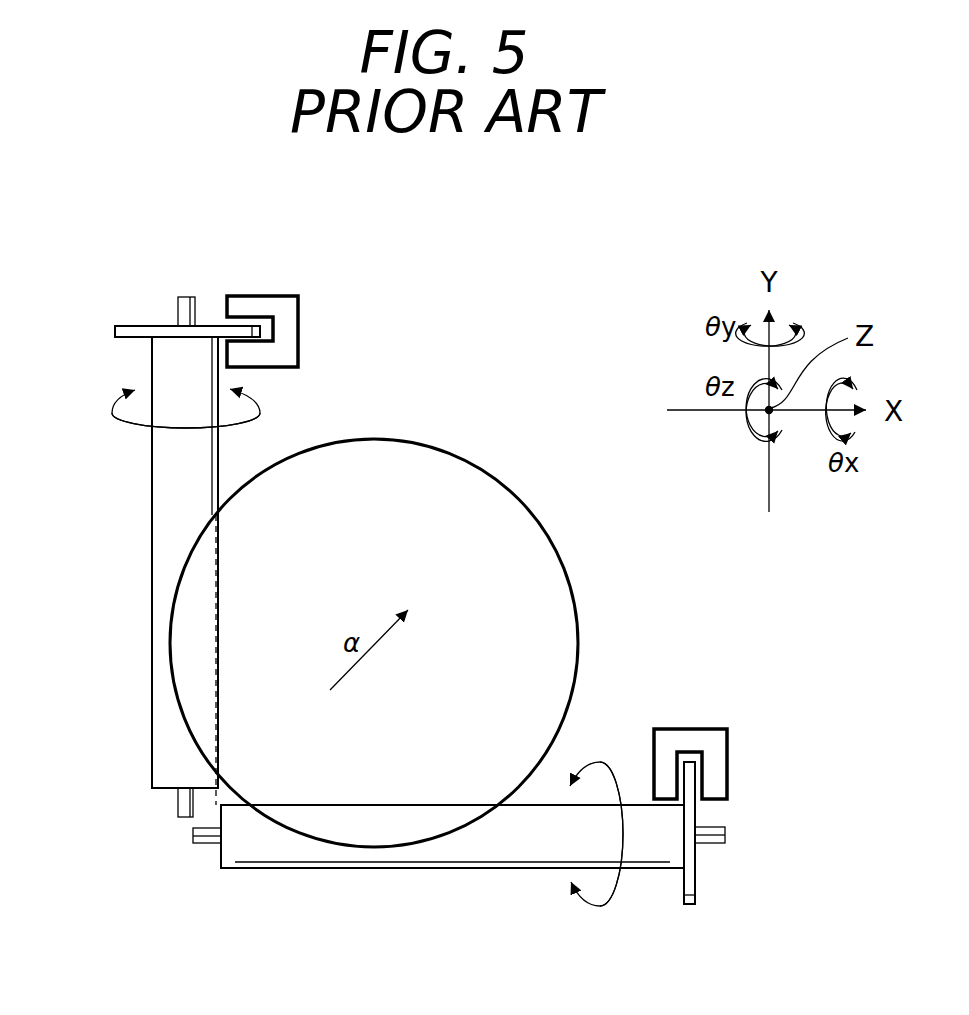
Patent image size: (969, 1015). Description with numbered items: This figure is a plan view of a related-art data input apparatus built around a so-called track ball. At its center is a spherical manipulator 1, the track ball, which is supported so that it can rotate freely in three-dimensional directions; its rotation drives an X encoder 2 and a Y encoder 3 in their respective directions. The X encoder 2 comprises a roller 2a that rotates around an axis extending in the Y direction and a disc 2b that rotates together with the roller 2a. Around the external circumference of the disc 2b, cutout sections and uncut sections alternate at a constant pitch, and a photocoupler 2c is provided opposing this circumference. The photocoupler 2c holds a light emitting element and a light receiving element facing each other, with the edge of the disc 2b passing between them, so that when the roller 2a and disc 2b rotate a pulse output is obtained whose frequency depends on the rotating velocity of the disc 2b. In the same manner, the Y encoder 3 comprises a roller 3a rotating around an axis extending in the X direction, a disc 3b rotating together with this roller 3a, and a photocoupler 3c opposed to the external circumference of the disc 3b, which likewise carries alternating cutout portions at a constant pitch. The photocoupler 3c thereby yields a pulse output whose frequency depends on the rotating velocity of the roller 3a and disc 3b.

The spherical manipulator 1 is at (535, 541).
The X encoder 2 is at (174, 522).
The roller 2a is at (157, 558).
The disc 2b is at (155, 325).
The photocoupler 2c is at (255, 305).
The Y encoder 3 is at (503, 861).
The roller 3a is at (313, 856).
The disc 3b is at (696, 893).
The photocoupler 3c is at (717, 766).